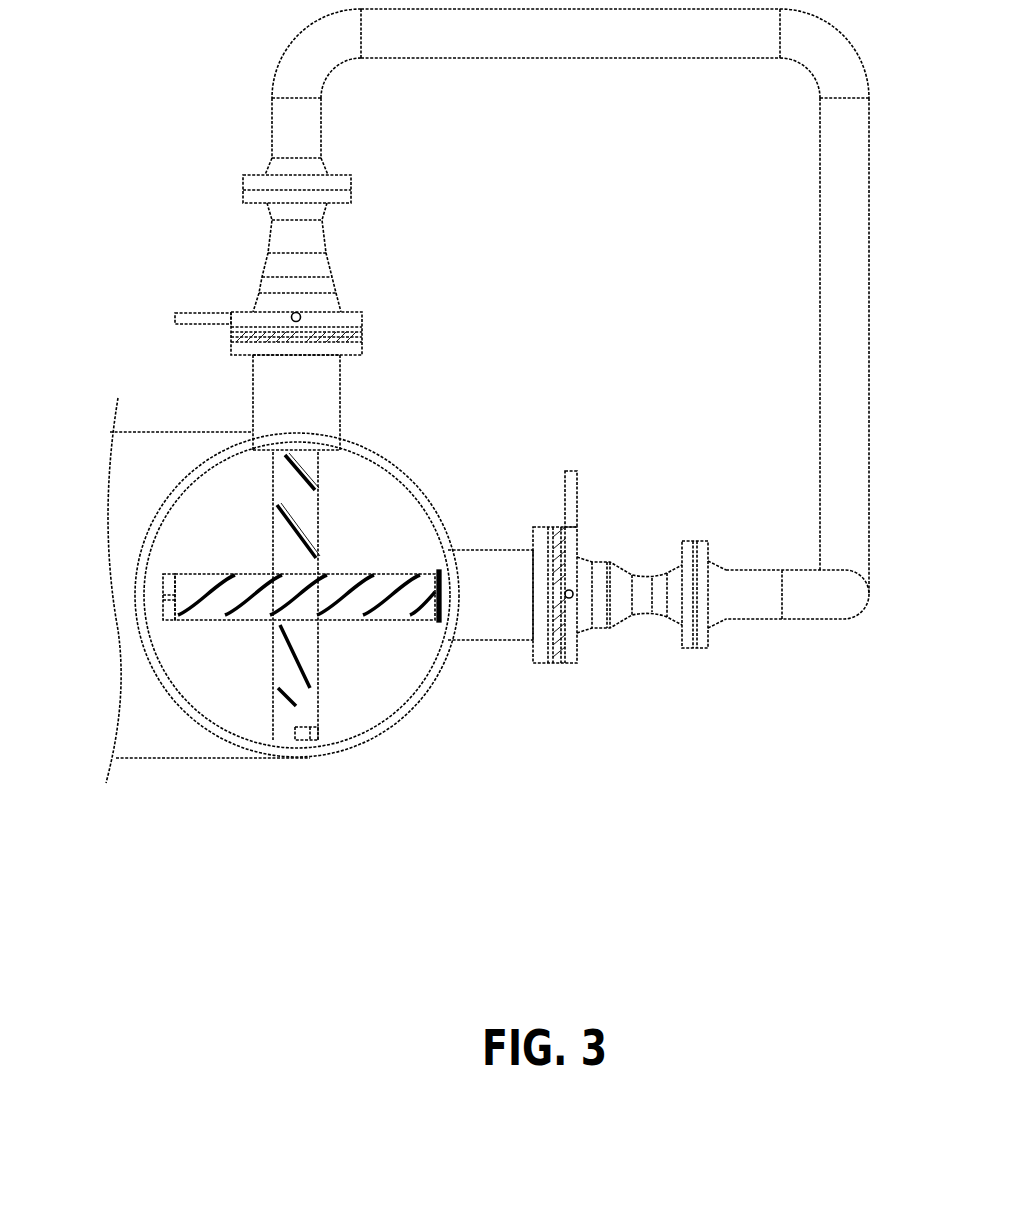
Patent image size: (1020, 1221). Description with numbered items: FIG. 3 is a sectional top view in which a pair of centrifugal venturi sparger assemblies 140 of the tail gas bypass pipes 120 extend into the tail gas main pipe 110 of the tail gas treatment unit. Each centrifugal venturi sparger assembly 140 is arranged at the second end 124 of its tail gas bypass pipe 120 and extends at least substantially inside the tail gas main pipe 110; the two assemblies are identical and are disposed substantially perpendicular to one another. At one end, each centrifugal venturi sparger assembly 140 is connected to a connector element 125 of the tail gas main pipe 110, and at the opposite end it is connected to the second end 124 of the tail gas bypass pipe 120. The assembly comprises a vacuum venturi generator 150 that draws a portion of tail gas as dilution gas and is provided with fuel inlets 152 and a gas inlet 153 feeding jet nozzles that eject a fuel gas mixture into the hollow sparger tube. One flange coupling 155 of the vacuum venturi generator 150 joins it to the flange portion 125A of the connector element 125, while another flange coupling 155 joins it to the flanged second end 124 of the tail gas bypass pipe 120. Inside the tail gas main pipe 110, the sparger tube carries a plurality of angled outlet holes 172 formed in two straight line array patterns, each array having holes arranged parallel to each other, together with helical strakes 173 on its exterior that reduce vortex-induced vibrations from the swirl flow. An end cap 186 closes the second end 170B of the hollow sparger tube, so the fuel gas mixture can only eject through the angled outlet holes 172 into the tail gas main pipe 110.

The tail gas main pipe 110 is at (212, 448).
The tail gas bypass pipe 120 is at (848, 283).
The second end of tail gas bypass pipe 124 is at (310, 173).
The connector element 125 is at (312, 385).
The flange portion 125A is at (327, 345).
The centrifugal venturi sparger assembly 140 is at (247, 168).
The vacuum venturi generator 150 is at (295, 210).
The fuel inlet 152 is at (300, 318).
The gas inlet 153 is at (208, 320).
The flange coupling 155 is at (327, 200).
The second end of hollow sparger tube 170B is at (163, 580).
The angled outlet holes 172 is at (272, 540).
The helical strakes 173 is at (300, 660).
The end cap 186 is at (165, 620).